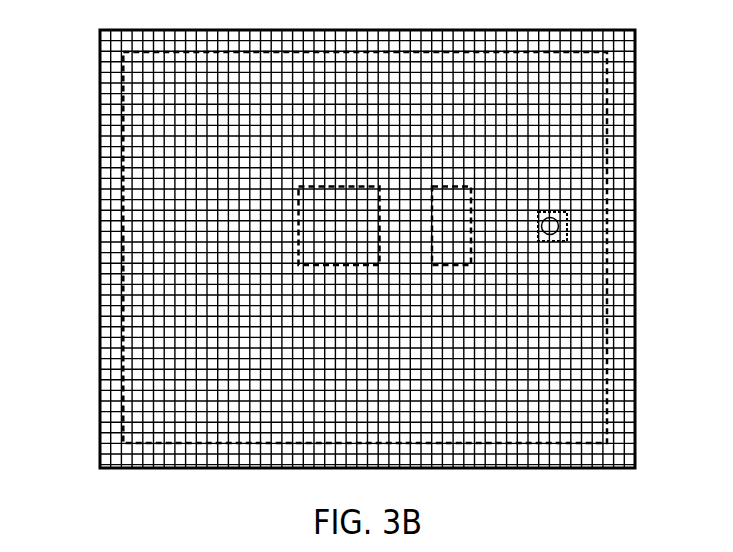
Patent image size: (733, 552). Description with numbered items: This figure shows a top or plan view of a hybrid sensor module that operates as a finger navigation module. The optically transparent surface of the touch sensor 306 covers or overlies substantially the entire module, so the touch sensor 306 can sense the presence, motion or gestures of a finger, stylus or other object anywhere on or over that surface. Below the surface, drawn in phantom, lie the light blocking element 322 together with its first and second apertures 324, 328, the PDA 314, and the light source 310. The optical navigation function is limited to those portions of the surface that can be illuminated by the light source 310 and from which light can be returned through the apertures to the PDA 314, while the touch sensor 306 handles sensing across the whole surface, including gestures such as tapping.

The touch sensor 306 is at (100, 58).
The light blocking element 322 is at (123, 120).
The PDA 314 is at (298, 229).
The second aperture 328 is at (453, 186).
The light source 310 is at (545, 242).
The first aperture 324 is at (558, 218).